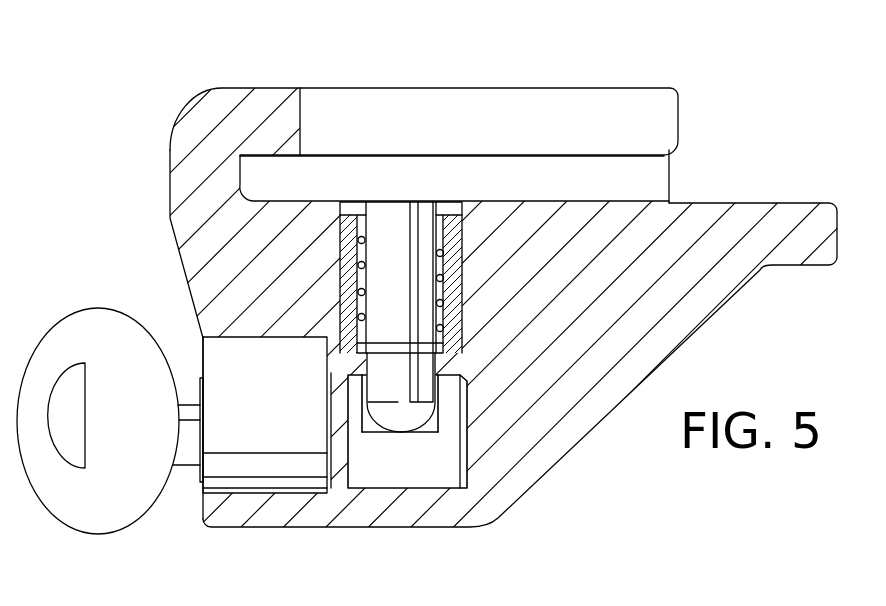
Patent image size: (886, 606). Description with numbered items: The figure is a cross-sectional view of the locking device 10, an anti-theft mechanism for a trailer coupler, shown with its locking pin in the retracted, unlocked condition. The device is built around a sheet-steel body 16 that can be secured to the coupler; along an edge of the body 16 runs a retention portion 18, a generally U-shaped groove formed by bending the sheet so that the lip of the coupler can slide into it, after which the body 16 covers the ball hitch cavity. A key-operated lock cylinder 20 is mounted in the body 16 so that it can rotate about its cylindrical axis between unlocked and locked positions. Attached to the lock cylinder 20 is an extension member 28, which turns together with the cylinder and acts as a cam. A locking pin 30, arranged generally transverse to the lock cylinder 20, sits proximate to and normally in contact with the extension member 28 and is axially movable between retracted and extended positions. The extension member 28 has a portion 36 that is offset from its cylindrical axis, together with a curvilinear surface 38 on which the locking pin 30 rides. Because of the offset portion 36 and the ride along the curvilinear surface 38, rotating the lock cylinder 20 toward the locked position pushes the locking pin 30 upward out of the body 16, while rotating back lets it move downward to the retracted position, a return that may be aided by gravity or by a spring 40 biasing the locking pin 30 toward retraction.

The locking device 10 is at (162, 83).
The body 16 is at (790, 250).
The retention portion 18 is at (643, 177).
The lock cylinder 20 is at (282, 467).
The extension member 28 is at (450, 473).
The locking pin 30 is at (415, 225).
The offset portion 36 is at (417, 473).
The curvilinear surface 38 is at (400, 435).
The spring 40 is at (368, 257).